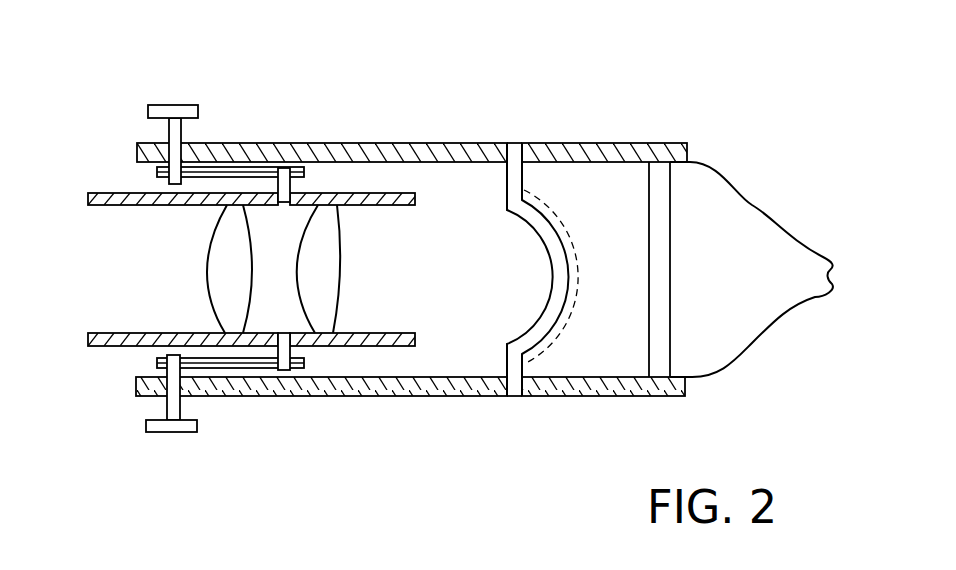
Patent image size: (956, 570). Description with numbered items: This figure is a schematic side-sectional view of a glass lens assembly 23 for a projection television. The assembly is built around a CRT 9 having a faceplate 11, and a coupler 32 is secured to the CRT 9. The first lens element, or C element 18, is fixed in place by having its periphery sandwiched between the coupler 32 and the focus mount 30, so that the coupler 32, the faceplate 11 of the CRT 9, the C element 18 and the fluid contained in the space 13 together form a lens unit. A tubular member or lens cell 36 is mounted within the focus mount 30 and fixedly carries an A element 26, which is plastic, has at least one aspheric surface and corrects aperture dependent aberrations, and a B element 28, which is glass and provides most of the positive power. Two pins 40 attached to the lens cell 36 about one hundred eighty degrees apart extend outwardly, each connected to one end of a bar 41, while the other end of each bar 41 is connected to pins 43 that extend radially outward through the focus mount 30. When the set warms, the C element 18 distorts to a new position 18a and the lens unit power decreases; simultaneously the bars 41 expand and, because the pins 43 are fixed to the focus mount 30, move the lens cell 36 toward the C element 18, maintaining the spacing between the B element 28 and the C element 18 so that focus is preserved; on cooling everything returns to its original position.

The glass lens assembly 23 is at (725, 112).
The focus mount 30 is at (443, 144).
The coupler 32 is at (602, 144).
The tubular member (lens cell) 36 is at (117, 207).
The pins 40 is at (305, 172).
The bar 41 is at (157, 174).
The pins 43 is at (182, 130).
The "A" element 26 is at (210, 272).
The "B" element 28 is at (338, 273).
The first lens element ("C" element) 18 is at (552, 277).
The new position 18a is at (565, 220).
The space 13 is at (624, 355).
The faceplate 11 is at (673, 283).
The CRT 9 is at (732, 205).